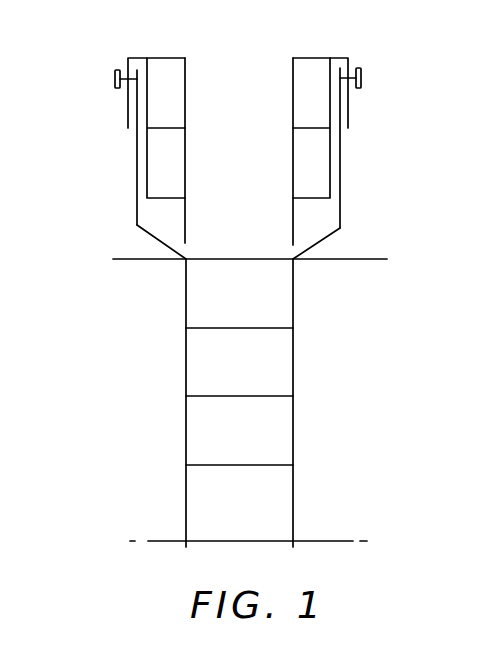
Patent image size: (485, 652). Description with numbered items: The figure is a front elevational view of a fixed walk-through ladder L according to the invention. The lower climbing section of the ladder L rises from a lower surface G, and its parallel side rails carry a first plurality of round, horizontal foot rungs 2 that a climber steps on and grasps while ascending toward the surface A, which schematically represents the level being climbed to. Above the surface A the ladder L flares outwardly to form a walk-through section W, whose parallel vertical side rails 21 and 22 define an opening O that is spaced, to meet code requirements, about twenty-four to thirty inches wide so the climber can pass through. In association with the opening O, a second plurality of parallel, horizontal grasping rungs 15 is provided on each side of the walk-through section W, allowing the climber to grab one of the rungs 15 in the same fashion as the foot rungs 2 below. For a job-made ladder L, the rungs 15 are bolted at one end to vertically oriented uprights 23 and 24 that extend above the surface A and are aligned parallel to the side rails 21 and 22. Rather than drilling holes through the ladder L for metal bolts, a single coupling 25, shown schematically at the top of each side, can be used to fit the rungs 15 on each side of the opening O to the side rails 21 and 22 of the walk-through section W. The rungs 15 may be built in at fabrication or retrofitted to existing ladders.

The foot rungs 2 is at (216, 260).
The grasping rungs 15 is at (170, 129).
The side rail 21 is at (137, 212).
The side rail 22 is at (341, 224).
The upright 23 is at (185, 228).
The upright 24 is at (293, 218).
The coupling 25 is at (115, 70).
The walk-through section W is at (130, 115).
The opening O is at (248, 167).
The surface A is at (370, 259).
The walk-through ladder L is at (178, 501).
The lower surface G is at (333, 542).